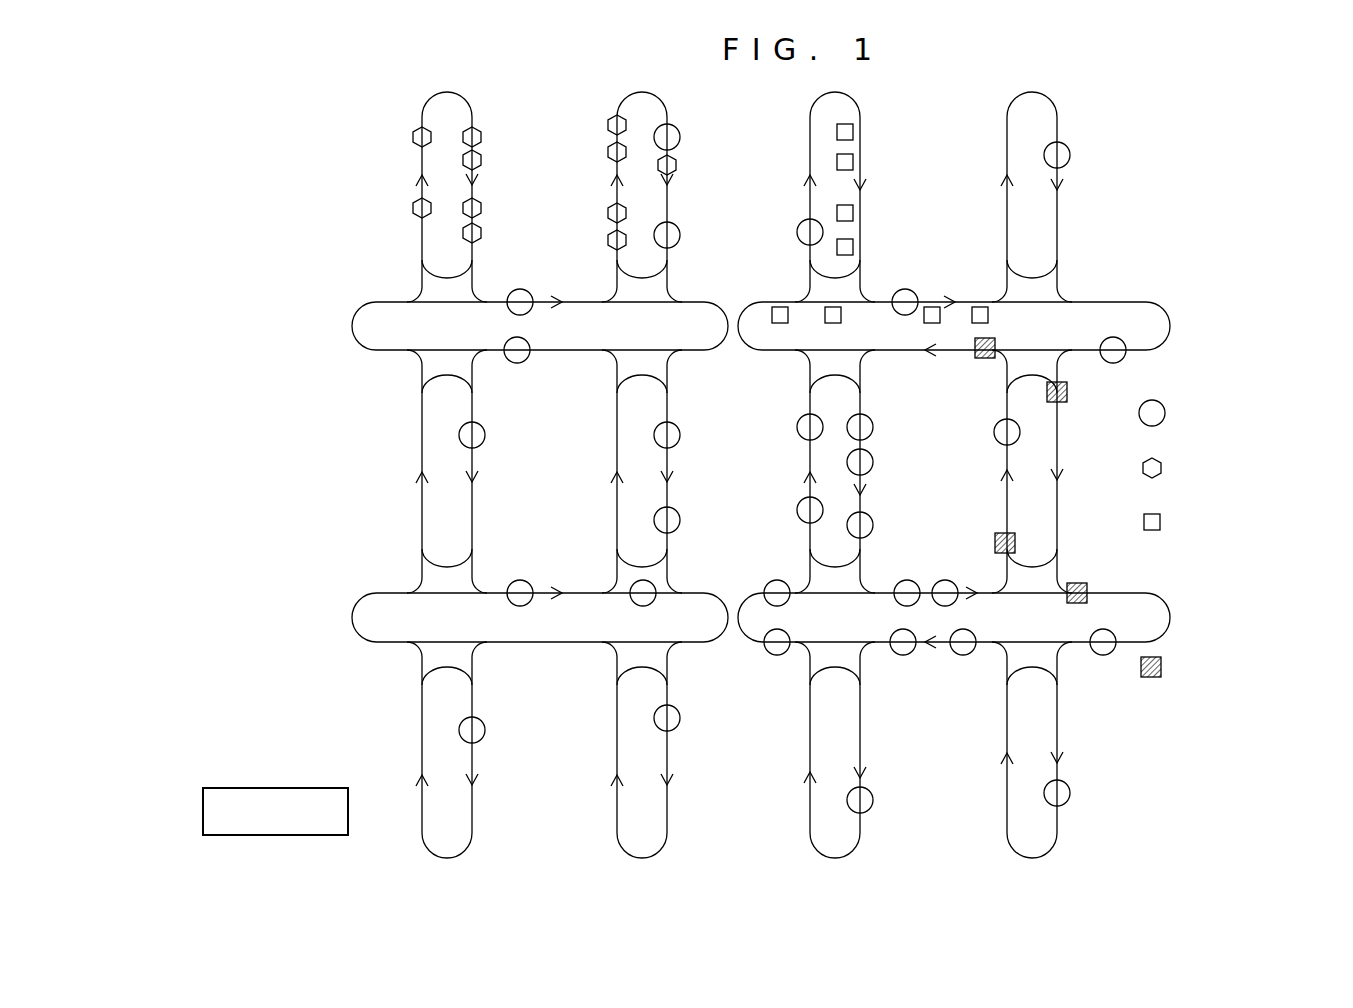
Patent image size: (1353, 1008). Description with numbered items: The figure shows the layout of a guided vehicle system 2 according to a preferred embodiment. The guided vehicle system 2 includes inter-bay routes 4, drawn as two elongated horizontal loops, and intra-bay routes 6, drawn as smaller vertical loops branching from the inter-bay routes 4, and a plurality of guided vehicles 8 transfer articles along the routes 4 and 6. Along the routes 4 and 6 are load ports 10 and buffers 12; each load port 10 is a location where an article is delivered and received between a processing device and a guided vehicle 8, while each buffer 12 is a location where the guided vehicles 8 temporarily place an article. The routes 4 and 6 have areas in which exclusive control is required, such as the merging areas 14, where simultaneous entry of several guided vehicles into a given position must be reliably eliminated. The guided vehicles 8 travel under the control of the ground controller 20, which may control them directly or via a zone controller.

The guided vehicle system 2 is at (749, 894).
The inter-bay route 4 is at (1162, 302).
The intra-bay route 6 is at (472, 113).
The guided vehicle 8 is at (1161, 404).
The load port 10 is at (1160, 460).
The buffer 12 is at (1158, 516).
The merging area 14 is at (1156, 678).
The ground controller 20 is at (303, 788).